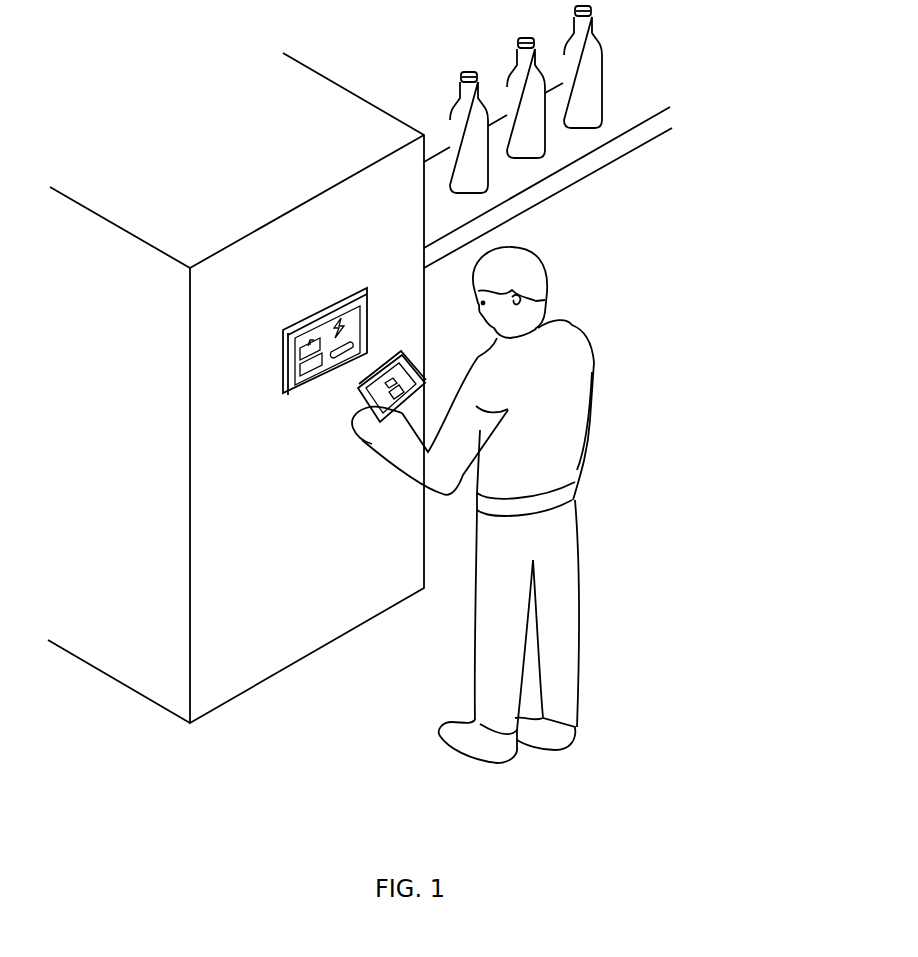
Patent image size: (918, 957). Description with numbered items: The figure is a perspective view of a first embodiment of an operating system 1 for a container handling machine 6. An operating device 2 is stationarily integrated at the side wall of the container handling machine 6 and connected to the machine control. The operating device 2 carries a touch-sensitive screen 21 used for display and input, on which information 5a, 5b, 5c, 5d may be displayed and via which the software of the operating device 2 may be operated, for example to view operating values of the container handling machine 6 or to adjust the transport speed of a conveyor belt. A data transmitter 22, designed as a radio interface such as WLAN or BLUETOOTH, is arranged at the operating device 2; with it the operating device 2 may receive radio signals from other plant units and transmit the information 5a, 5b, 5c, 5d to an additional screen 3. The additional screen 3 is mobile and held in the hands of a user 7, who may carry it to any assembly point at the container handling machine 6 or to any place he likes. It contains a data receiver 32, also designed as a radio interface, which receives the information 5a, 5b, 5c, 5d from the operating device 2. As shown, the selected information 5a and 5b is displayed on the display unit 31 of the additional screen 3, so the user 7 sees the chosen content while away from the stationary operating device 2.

The operating system 1 is at (360, 364).
The operating device 2 is at (325, 329).
The touch-sensitive screen 21 is at (368, 300).
The data transmitter 22 is at (367, 288).
The additional screen 3 is at (406, 378).
The display unit 31 is at (411, 393).
The data receiver 32 is at (405, 358).
The information 5a is at (306, 342).
The information 5b is at (296, 373).
The information 5c is at (340, 318).
The information 5d is at (334, 374).
The container handling machine 6 is at (178, 682).
The user 7 is at (546, 444).